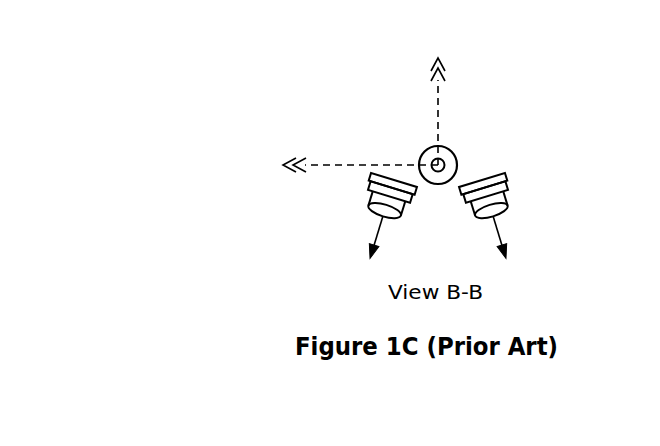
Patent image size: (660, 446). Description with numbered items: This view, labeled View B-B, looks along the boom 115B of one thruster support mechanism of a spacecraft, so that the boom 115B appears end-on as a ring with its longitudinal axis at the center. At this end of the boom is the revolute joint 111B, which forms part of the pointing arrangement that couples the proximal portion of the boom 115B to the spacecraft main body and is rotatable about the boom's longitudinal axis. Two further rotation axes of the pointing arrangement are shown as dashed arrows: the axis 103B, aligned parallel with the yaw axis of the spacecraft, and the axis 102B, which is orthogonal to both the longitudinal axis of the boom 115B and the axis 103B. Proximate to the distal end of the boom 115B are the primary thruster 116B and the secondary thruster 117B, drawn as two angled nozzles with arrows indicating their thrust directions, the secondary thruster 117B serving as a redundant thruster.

The axis 102B is at (322, 165).
The axis 103B is at (439, 97).
The revolute joint 111B is at (451, 146).
The boom 115B is at (458, 162).
The primary thruster 116B is at (367, 200).
The secondary thruster 117B is at (503, 195).